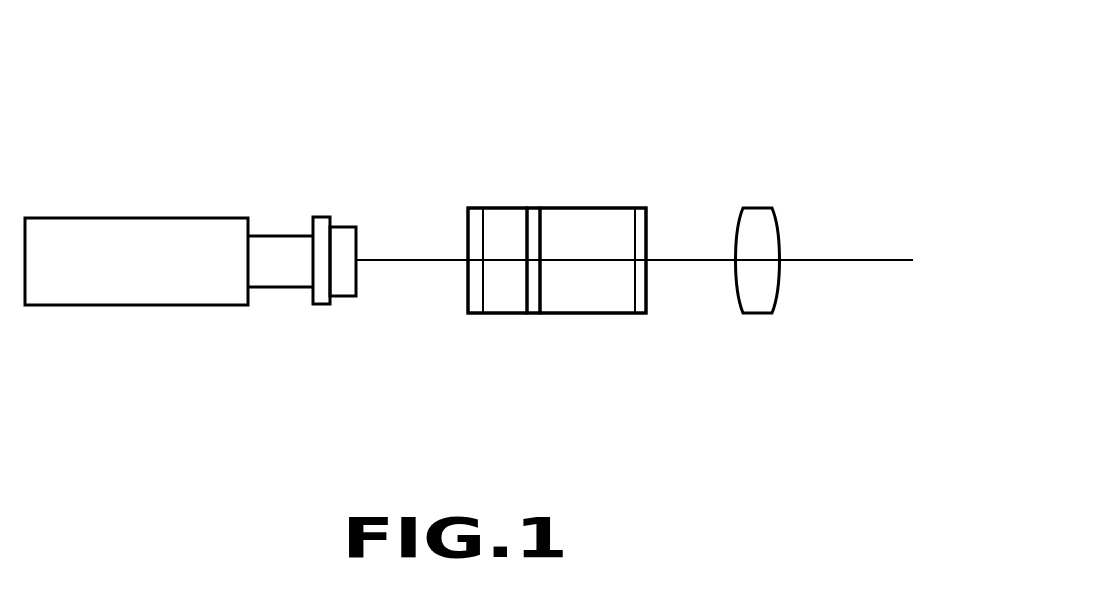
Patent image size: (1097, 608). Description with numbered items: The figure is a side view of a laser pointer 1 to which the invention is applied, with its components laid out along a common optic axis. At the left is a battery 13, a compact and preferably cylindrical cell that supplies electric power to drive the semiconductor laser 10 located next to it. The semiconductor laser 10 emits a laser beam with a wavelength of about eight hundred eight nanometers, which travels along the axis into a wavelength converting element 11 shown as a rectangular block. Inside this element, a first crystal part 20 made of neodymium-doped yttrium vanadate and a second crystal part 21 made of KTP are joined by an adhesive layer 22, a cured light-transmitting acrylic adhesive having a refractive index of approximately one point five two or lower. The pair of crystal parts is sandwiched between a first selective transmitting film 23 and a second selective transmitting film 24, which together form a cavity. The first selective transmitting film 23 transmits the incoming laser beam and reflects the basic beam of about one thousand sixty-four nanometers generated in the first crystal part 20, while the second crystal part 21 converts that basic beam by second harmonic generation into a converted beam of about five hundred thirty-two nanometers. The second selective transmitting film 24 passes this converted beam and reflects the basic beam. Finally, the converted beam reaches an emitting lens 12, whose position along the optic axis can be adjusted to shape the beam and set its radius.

The laser pointer 1 is at (432, 118).
The semiconductor laser 10 is at (345, 230).
The wavelength converting element 11 is at (552, 286).
The emitting lens 12 is at (758, 213).
The battery 13 is at (137, 224).
The first crystal part 20 is at (508, 302).
The second crystal part 21 is at (588, 300).
The adhesive layer 22 is at (535, 303).
The first selective transmitting film 23 is at (473, 303).
The second selective transmitting film 24 is at (637, 303).